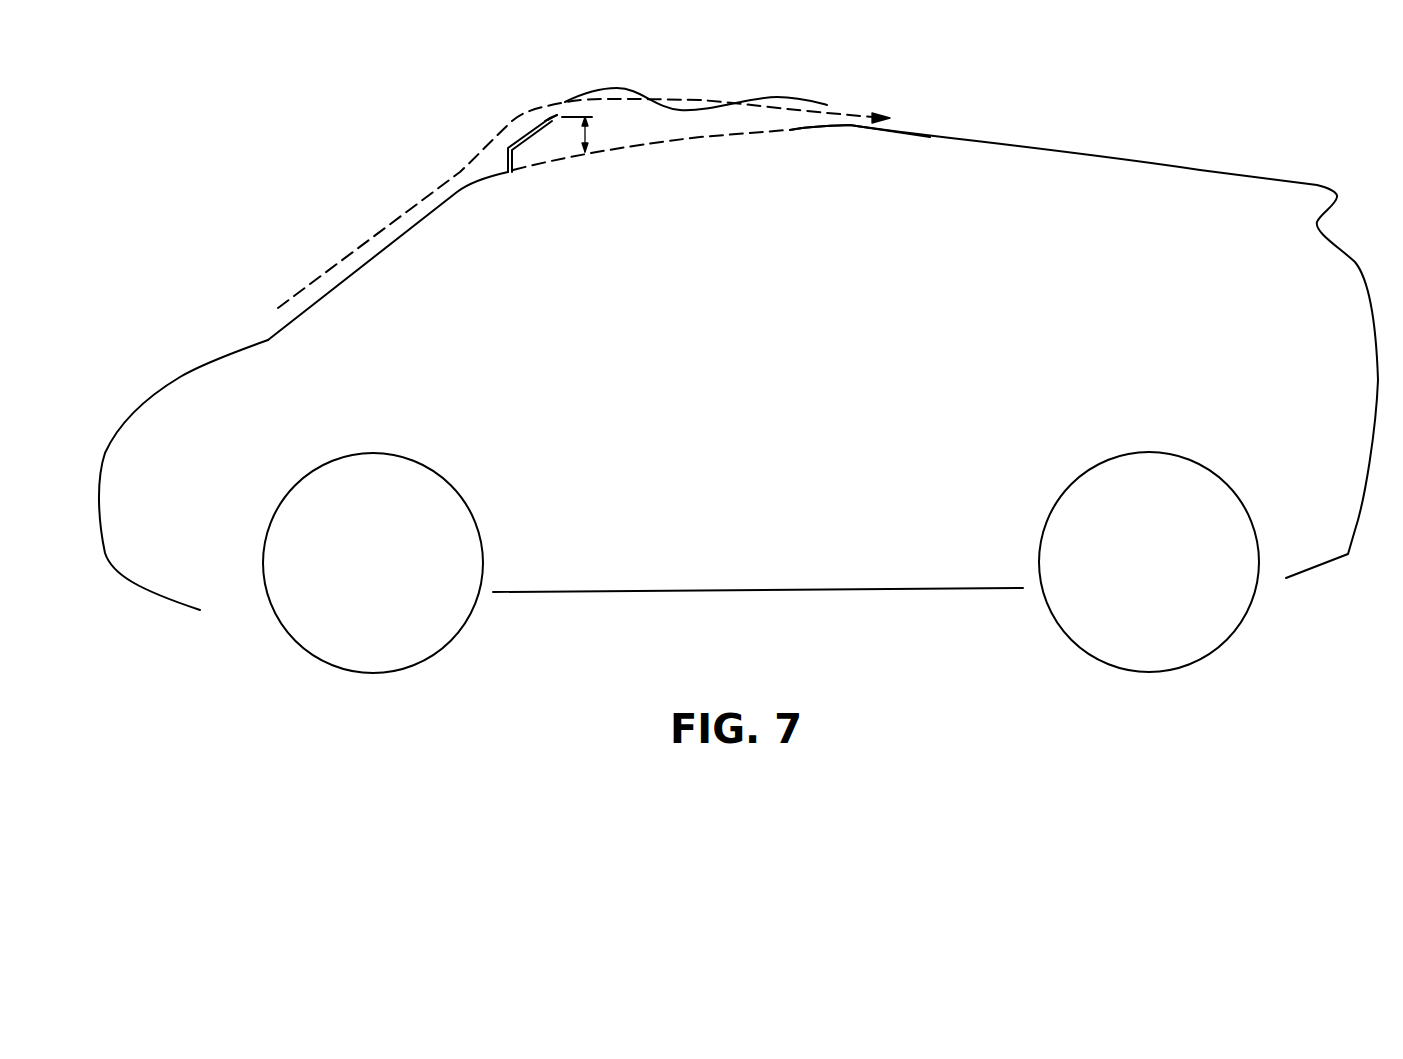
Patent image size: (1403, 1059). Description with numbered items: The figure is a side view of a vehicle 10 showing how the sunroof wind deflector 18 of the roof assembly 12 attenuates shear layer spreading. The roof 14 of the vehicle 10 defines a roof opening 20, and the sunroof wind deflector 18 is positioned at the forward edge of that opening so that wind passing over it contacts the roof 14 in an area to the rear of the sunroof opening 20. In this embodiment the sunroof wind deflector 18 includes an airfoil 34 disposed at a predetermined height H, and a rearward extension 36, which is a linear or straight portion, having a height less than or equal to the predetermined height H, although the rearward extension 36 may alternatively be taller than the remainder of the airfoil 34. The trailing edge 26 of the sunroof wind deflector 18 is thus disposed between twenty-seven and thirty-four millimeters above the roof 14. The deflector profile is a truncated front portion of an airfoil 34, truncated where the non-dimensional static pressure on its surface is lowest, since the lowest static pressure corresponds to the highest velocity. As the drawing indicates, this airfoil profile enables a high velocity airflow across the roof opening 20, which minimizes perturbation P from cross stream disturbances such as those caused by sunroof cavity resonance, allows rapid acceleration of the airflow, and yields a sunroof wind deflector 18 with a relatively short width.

The vehicle 10 is at (1097, 153).
The roof assembly 12 is at (655, 172).
The roof 14 is at (810, 130).
The sunroof wind deflector 18 is at (533, 127).
The roof opening 20 is at (705, 137).
The trailing edge 26 is at (553, 118).
The airfoil 34 is at (538, 110).
The rearward extension 36 is at (548, 117).
The predetermined height H is at (590, 134).
The perturbation P is at (709, 70).